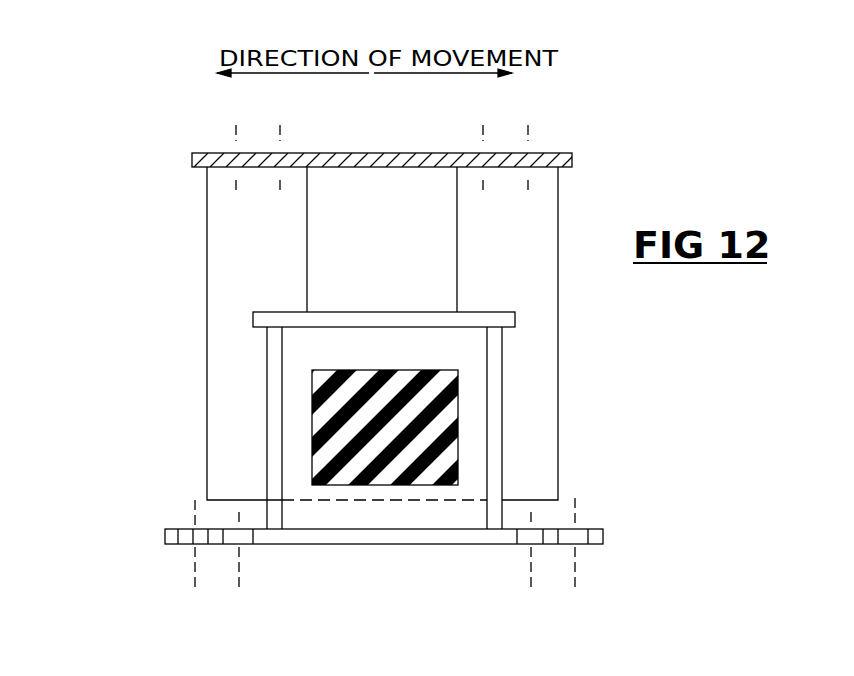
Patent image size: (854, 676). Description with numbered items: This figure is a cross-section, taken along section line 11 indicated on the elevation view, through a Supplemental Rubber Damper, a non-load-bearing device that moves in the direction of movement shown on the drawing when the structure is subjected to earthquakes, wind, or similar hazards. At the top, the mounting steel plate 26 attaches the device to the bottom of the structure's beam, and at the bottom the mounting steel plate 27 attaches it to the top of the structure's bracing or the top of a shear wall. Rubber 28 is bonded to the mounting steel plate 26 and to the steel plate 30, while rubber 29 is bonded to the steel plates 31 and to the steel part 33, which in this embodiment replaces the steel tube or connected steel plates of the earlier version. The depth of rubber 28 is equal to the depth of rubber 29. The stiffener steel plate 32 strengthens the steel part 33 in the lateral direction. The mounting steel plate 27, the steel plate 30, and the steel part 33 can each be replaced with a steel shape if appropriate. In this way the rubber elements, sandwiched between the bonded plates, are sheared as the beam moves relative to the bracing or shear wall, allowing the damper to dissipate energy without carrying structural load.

The section line 11— 11 is at (419, 332).
The mounting steel plate 26 is at (319, 184).
The mounting steel plate 27 is at (384, 564).
The rubber 28 is at (482, 244).
The rubber 29 is at (382, 400).
The steel plate 30 is at (455, 353).
The steel plates 31 is at (432, 333).
The stiffener steel plate 32 is at (370, 428).
The steel part replacing steel tube 33 is at (202, 428).